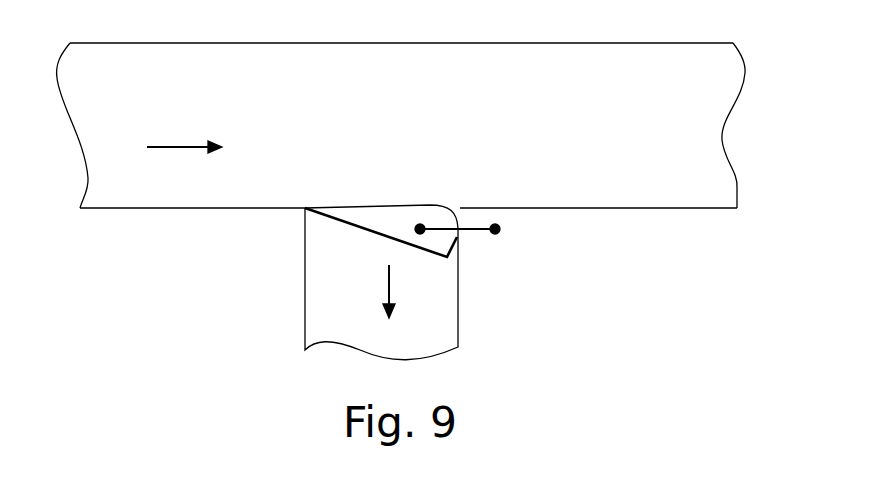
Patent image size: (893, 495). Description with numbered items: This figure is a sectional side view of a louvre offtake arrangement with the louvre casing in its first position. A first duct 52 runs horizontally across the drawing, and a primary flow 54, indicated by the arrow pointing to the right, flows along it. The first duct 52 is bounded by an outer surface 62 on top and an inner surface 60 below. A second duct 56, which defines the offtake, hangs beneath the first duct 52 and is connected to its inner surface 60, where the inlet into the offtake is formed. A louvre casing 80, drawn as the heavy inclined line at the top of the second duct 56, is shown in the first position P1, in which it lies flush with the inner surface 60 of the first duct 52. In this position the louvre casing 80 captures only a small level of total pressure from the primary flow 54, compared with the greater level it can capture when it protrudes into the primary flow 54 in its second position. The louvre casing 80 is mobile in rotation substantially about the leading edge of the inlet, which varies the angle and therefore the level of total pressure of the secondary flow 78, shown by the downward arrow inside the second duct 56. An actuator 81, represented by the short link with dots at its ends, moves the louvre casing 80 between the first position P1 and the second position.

The first duct 52 is at (112, 80).
The primary flow 54 is at (183, 147).
The second duct 56 is at (350, 293).
The inner surface 60 is at (665, 208).
The outer surface 62 is at (638, 43).
The secondary flow 78 is at (389, 282).
The louvre casing 80 is at (352, 217).
The actuator 81 is at (468, 231).
The first position P1 is at (603, 282).